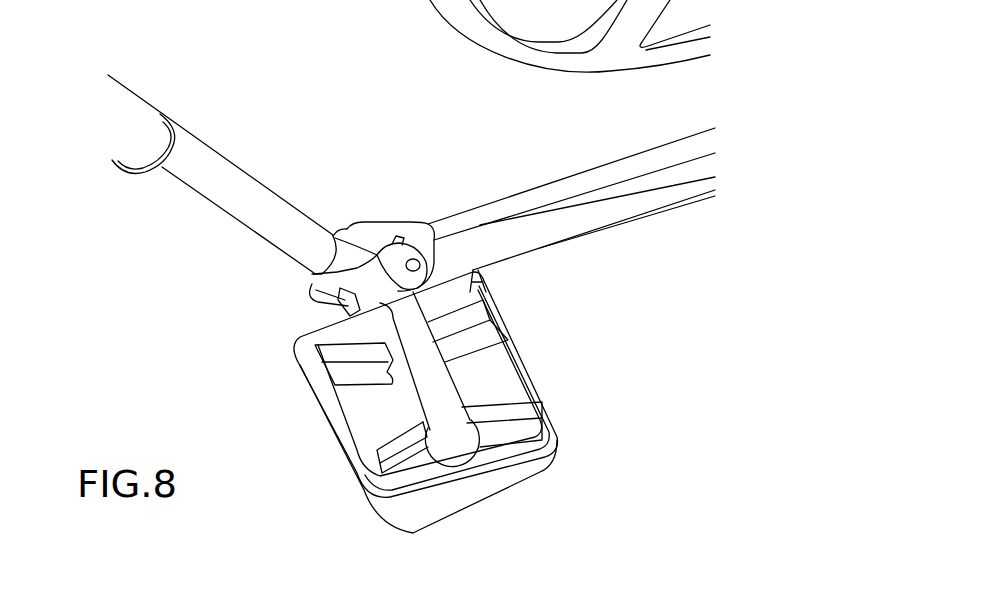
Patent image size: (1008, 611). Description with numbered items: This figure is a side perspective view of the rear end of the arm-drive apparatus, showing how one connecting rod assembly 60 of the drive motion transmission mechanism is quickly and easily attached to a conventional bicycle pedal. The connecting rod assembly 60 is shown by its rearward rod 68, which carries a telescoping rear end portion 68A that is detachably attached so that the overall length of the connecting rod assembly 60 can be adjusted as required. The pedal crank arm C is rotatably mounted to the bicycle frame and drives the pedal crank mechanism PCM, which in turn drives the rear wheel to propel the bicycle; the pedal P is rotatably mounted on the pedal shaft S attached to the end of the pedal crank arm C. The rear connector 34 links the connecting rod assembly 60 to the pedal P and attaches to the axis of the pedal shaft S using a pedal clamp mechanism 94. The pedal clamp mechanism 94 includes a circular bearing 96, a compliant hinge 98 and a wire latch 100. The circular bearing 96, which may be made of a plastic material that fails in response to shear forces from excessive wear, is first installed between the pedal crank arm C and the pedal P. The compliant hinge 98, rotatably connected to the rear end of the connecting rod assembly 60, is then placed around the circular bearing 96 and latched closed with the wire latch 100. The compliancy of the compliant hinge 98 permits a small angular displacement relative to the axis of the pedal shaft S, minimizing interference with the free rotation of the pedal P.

The connecting rod assembly 60 is at (152, 197).
The rearward rod 68 is at (127, 108).
The telescoping rear end portion 68A is at (235, 183).
The pedal crank mechanism PCM is at (333, 103).
The rear connector 34 is at (378, 224).
The compliant hinge 98 is at (345, 240).
The pedal clamp mechanism 94 is at (358, 211).
The wire latch 100 is at (312, 304).
The circular bearing 96 is at (320, 320).
The pedal crank arm C is at (553, 185).
The pedal shaft S is at (390, 285).
The pedal P is at (533, 381).